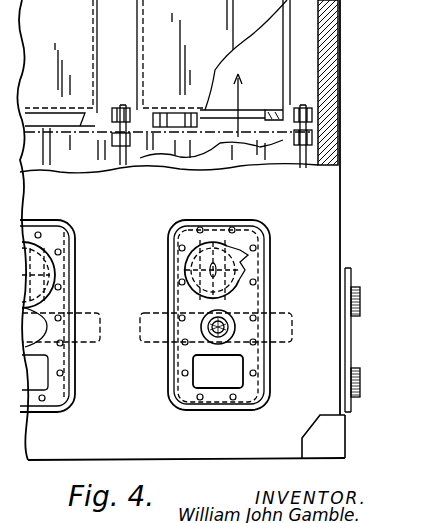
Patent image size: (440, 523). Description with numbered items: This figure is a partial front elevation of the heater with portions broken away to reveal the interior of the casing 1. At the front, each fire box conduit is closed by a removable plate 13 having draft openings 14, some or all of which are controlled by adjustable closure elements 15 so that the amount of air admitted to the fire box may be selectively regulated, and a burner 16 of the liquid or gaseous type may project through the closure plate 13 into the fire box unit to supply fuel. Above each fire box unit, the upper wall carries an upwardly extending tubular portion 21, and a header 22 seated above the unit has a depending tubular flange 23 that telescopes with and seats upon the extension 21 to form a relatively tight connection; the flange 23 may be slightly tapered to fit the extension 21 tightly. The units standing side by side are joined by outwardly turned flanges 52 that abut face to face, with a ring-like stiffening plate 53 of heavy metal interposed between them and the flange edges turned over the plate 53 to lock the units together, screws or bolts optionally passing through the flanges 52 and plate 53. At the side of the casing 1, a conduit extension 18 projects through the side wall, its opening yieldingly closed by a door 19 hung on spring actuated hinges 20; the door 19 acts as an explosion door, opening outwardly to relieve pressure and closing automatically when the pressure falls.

The casing 1 is at (340, 98).
The removable plate 13 is at (197, 350).
The draft openings 14 is at (72, 257).
The adjustable closure elements 15 is at (57, 276).
The burner 16 is at (103, 318).
The conduit extensions 18 is at (336, 142).
The doors 19 is at (352, 346).
The spring actuated hinges 20 is at (357, 301).
The upwardly extending tubular portion 21 is at (232, 116).
The header 22 is at (97, 78).
The depending tubular flange 23 is at (117, 137).
The outwardly turned flanges 52 is at (121, 107).
The stiffening plate 53 is at (128, 131).